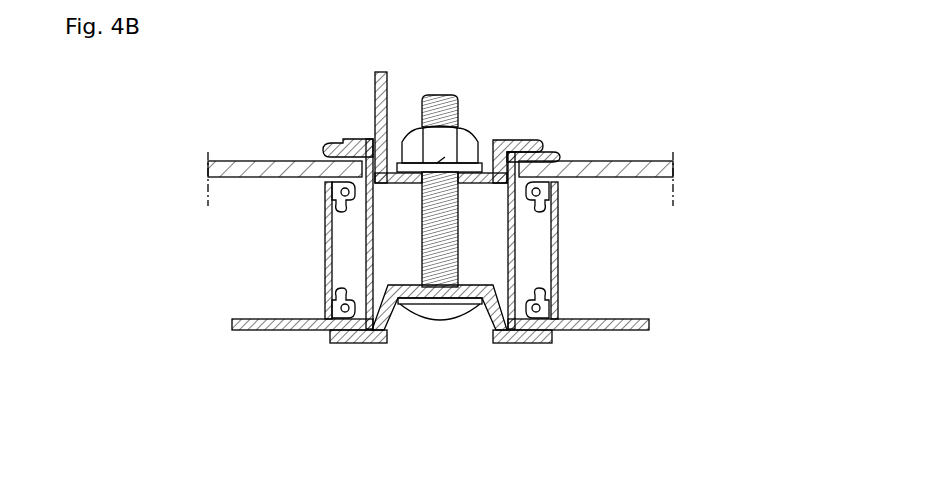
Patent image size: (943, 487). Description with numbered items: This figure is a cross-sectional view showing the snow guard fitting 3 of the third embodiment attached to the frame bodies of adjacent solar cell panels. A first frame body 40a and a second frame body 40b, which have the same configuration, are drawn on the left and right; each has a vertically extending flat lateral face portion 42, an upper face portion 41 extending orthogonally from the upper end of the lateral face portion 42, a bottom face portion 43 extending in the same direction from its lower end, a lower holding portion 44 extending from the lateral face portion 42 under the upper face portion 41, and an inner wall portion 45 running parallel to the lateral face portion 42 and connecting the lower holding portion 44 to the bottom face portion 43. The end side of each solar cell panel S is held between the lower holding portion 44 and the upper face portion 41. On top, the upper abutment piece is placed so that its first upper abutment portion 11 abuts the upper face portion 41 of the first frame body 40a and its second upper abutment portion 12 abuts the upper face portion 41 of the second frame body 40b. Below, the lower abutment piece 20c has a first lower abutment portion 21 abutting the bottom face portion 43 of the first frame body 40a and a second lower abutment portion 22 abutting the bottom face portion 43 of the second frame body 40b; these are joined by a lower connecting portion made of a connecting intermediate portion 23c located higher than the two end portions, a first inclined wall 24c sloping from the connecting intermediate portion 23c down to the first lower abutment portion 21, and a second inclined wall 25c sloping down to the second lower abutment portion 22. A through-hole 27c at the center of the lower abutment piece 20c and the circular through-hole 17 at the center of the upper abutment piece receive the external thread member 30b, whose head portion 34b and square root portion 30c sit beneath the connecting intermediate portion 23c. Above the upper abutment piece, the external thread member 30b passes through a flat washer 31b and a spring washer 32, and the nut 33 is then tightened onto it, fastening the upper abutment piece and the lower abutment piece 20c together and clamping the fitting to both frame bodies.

The snow guard fitting 3 is at (413, 387).
The first upper abutment portion 11 is at (352, 139).
The second upper abutment portion 12 is at (527, 139).
The through-hole 17 is at (421, 188).
The lower abutment piece 20c is at (443, 315).
The first lower abutment portion 21 is at (353, 342).
The second lower abutment portion 22 is at (523, 342).
The connecting intermediate portion 23c is at (477, 284).
The first inclined wall 24c is at (387, 287).
The second inclined wall 25c is at (496, 287).
The washer 27c is at (423, 303).
The external thread member 30b is at (440, 94).
The square root portion 30c is at (440, 302).
The flat washer 31b is at (483, 161).
The spring washer 32 is at (399, 157).
The nut 33 is at (462, 127).
The head portion 34b is at (461, 295).
The first frame body 40a is at (269, 254).
The second frame body 40b is at (606, 262).
The upper face portion 41 is at (322, 152).
The lateral face portion 42 is at (514, 255).
The bottom face portion 43 is at (263, 331).
The lower holding portion 44 is at (355, 189).
The inner wall portion 45 is at (323, 295).
The solar cell panel S is at (232, 161).